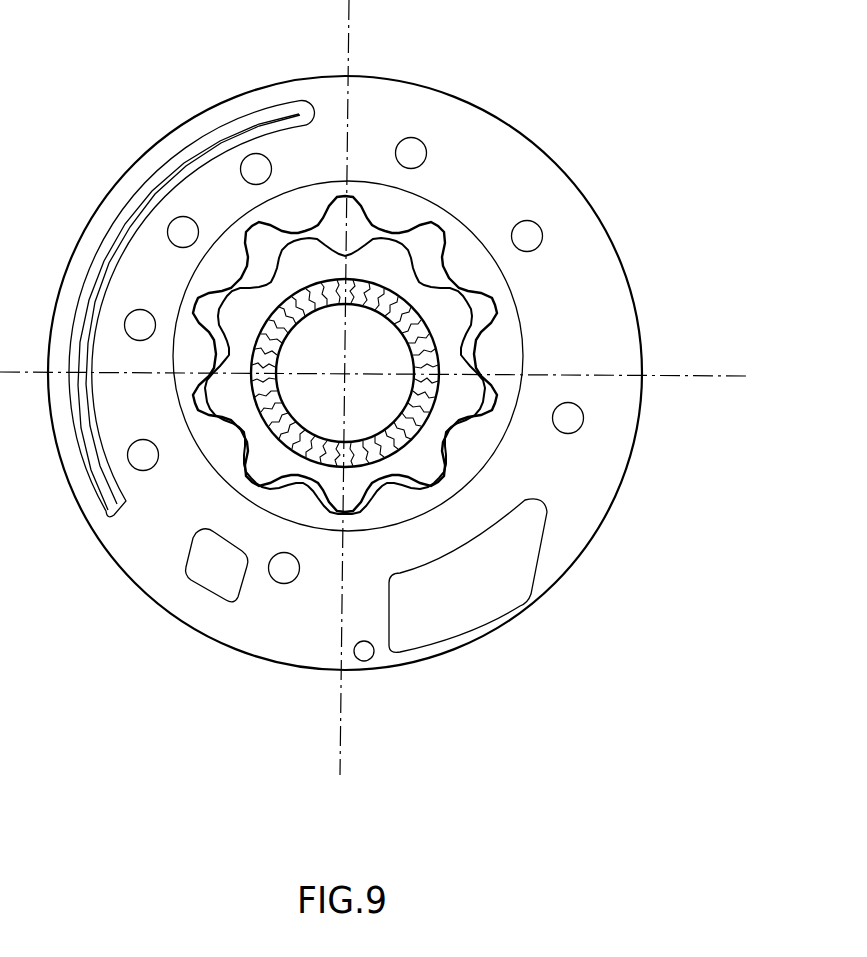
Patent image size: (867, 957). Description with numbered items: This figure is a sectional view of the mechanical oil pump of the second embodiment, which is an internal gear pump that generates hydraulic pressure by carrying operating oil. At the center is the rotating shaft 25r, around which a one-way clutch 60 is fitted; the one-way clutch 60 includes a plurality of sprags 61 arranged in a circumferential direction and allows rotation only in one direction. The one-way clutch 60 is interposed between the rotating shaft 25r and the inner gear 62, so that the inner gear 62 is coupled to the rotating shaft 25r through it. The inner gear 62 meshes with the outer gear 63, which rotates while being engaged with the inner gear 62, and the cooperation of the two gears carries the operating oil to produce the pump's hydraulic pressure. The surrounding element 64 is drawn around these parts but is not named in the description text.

The one-way clutch 60 is at (428, 338).
The sprags 61 is at (412, 374).
The inner gear 62 is at (387, 257).
The outer gear 63 is at (484, 277).
The pump housing plate 64 is at (613, 452).
The rotating shaft 25r is at (394, 455).